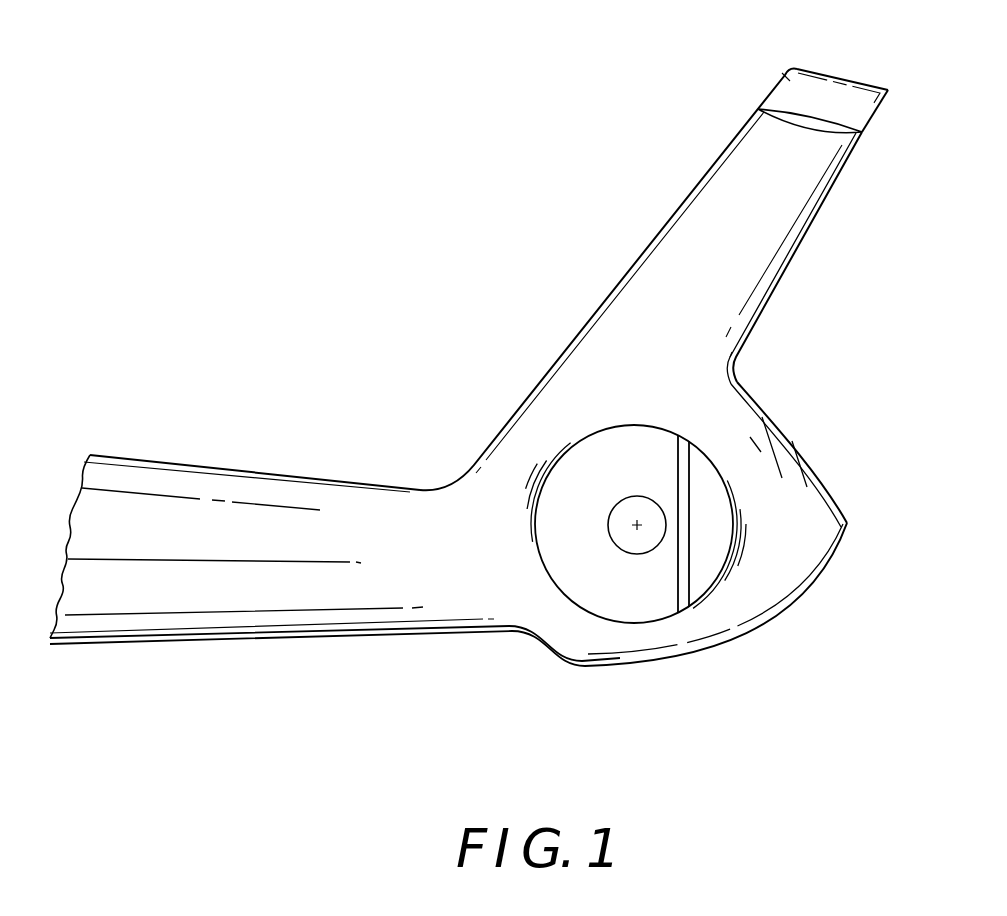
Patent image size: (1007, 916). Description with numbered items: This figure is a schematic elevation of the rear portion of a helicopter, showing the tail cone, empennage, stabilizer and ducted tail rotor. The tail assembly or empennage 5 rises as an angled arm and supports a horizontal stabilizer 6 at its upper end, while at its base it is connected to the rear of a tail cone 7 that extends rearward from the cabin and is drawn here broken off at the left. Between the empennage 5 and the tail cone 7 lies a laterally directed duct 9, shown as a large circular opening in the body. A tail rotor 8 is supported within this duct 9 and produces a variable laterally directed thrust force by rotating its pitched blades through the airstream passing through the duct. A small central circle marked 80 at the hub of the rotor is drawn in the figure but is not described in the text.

The empennage 5 is at (707, 203).
The horizontal stabilizer 6 is at (787, 108).
The tail cone 7 is at (242, 487).
The tail rotor 8 is at (609, 554).
The duct 9 is at (712, 483).
The center hole 80 is at (643, 539).